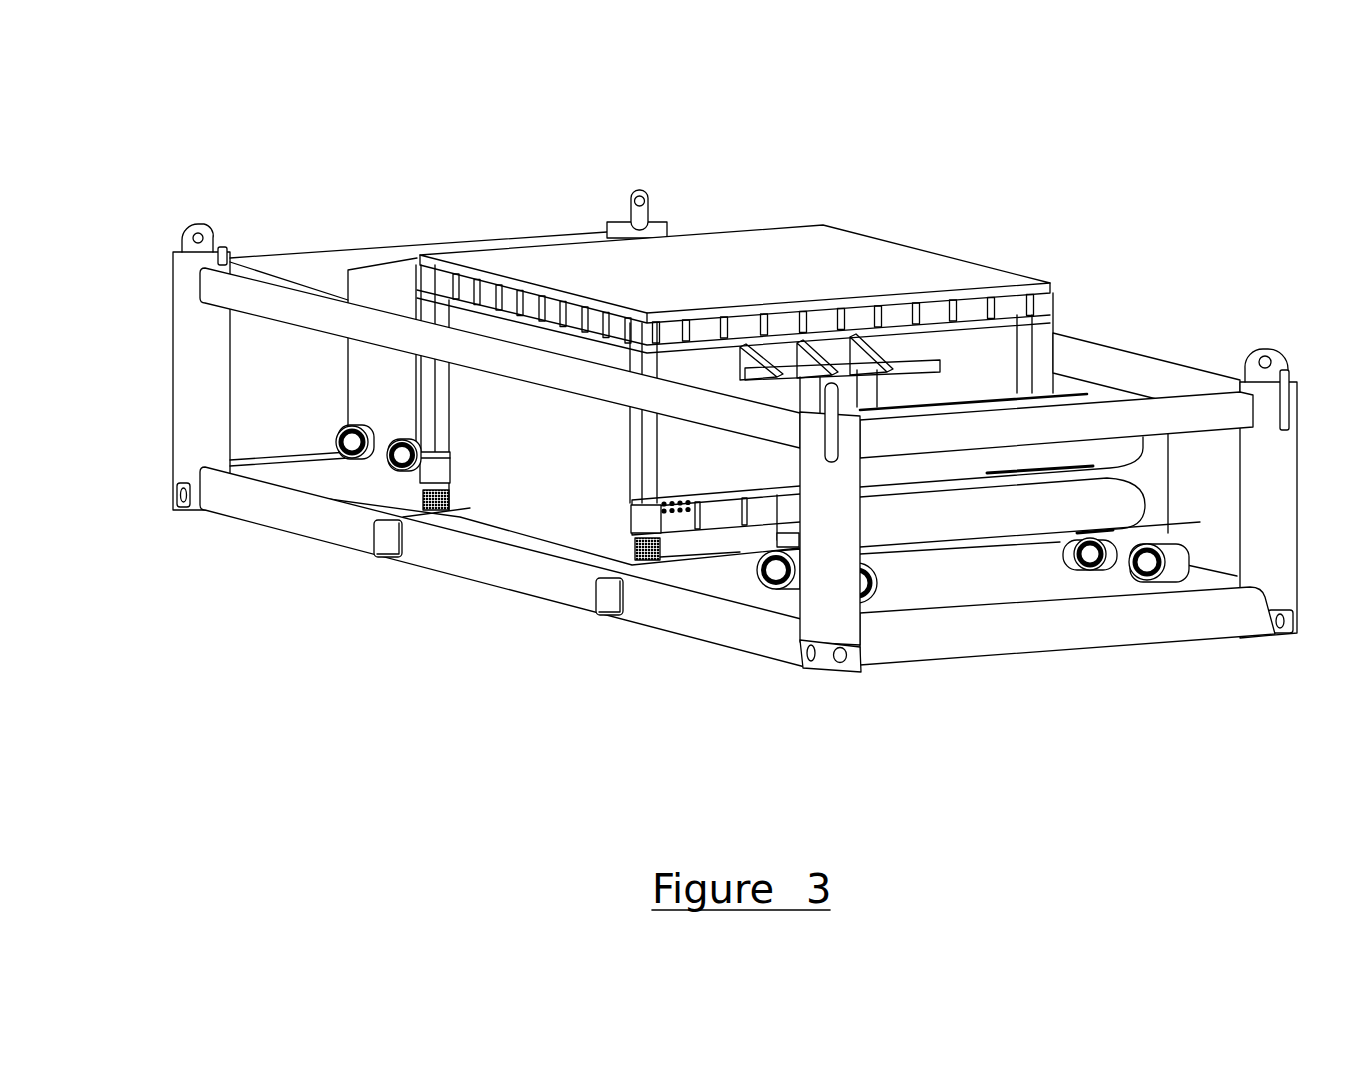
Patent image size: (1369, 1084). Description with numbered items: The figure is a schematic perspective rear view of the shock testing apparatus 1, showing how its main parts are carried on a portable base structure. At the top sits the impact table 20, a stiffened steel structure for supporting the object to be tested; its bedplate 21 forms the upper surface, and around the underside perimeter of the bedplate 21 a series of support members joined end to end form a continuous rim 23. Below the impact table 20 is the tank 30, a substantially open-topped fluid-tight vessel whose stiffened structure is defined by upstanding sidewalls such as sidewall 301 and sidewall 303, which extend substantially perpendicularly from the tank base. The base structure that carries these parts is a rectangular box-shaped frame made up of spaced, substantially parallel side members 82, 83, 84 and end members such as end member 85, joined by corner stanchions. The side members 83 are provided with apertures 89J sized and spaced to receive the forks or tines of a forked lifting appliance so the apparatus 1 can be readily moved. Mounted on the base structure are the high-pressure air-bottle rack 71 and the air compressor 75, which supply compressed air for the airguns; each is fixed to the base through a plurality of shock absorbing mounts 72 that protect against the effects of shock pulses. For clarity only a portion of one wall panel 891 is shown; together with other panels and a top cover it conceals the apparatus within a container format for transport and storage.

The shock testing apparatus 1 is at (327, 180).
The impact table 20 is at (838, 218).
The bedplate 21 is at (880, 265).
The rim 23 is at (1018, 307).
The tank 30 is at (550, 487).
The sidewall 301 is at (603, 538).
The sidewall 303 is at (505, 478).
The rack 71 is at (918, 560).
The shock absorbing mounts 72 is at (358, 452).
The air compressor 75 is at (378, 290).
The side member 82 is at (1146, 356).
The side member 83 is at (243, 500).
The side member 84 is at (287, 297).
The end member 85 is at (1047, 624).
The apertures 89J is at (388, 545).
The wall panel 891 is at (258, 399).